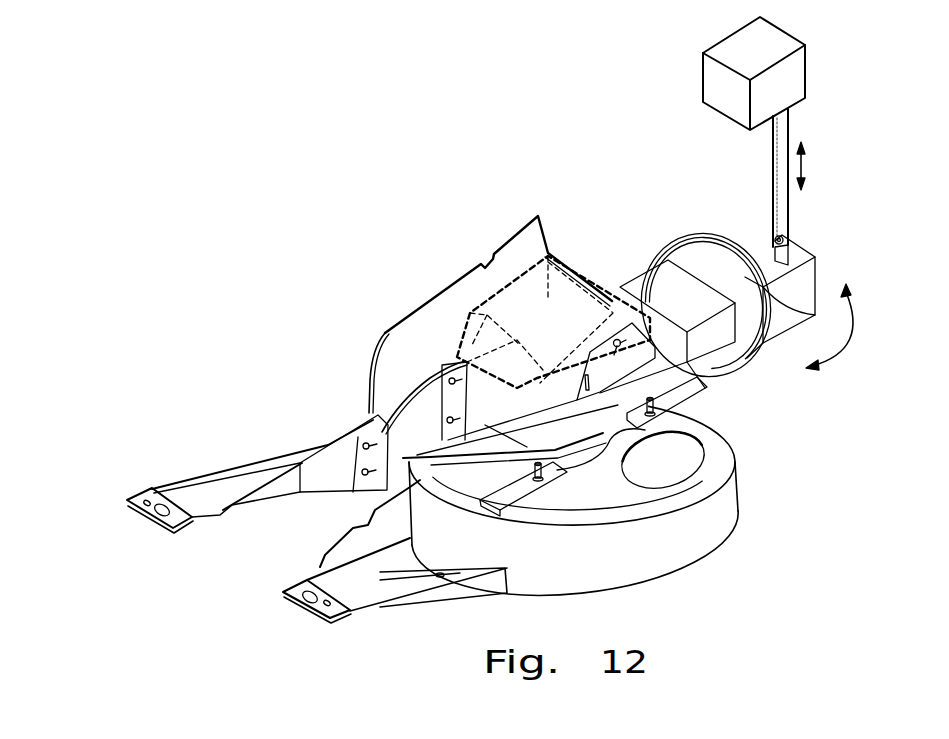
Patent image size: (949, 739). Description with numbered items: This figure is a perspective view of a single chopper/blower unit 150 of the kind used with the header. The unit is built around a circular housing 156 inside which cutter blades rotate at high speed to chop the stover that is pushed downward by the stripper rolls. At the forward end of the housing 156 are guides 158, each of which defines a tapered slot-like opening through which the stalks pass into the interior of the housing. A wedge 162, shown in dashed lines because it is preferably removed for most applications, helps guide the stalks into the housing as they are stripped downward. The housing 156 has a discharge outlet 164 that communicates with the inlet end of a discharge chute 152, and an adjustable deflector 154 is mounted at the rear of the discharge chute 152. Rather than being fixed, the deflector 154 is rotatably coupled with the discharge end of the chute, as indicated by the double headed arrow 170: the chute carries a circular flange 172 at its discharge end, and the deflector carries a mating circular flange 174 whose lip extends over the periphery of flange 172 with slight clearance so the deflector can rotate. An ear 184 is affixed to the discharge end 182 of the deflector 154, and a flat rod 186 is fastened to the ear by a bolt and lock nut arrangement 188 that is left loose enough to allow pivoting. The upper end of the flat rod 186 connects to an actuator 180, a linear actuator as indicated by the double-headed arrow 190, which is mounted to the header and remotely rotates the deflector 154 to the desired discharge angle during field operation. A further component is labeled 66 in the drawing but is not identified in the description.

The chopper/blower unit 150 is at (537, 166).
The discharge chute 152 is at (637, 279).
The adjustable deflector 154 is at (732, 232).
The circular housing 156 is at (698, 560).
The guides 158 is at (322, 575).
The wedge 162 is at (527, 297).
The discharge outlet 164 is at (560, 256).
The double headed arrow 170 is at (855, 342).
The circular flange 172 is at (742, 345).
The circular flange 174 is at (671, 262).
The actuator 180 is at (803, 73).
The discharge end 182 is at (820, 277).
The ear 184 is at (793, 250).
The flat rod 186 is at (788, 130).
The bolt and lock nut arrangement 188 is at (787, 233).
The double-headed arrow 190 is at (803, 170).
The roller edge 66 is at (720, 368).